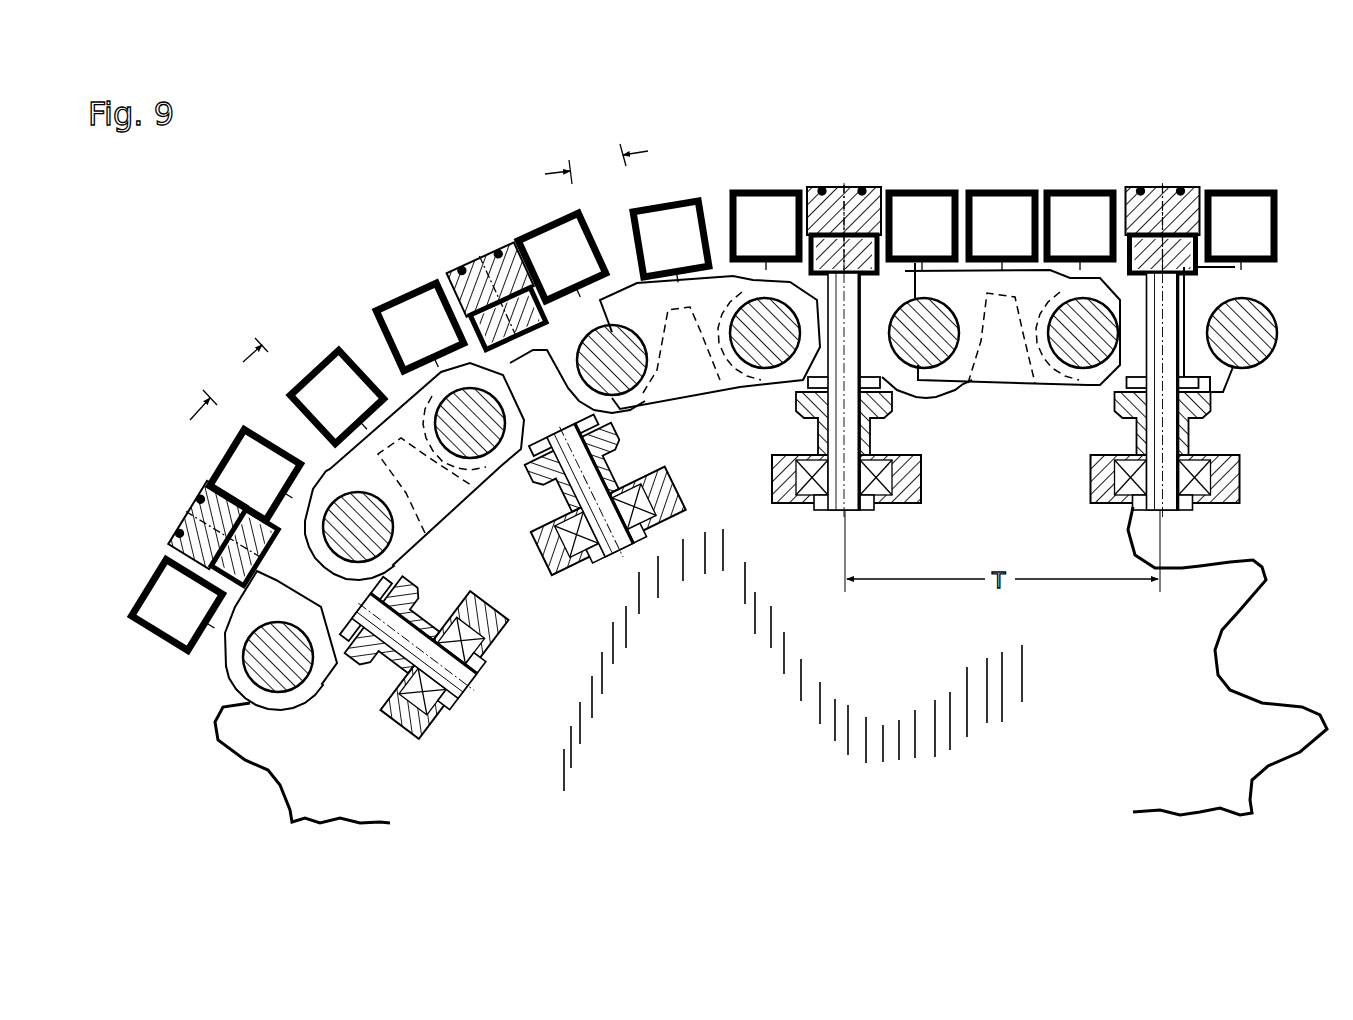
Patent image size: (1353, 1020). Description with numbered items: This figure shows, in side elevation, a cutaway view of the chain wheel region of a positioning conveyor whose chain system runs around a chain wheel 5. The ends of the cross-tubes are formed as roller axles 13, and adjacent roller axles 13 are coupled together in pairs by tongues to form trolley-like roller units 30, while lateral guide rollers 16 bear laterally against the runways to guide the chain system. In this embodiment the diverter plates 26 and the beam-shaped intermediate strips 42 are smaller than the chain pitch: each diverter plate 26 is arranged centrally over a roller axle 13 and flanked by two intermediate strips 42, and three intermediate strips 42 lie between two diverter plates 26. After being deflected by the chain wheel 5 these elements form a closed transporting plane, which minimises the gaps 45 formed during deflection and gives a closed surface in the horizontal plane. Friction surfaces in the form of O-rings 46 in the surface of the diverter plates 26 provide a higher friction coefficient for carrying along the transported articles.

The chain wheel 5 is at (771, 665).
The roller axle 13 is at (821, 443).
The lateral guide roller 16 is at (845, 625).
The diverter plate 26 is at (683, 359).
The roller unit 30 is at (741, 446).
The intermediate strip 42 is at (709, 392).
The gap 45 is at (408, 259).
The friction surface (O-ring) 46 is at (642, 333).